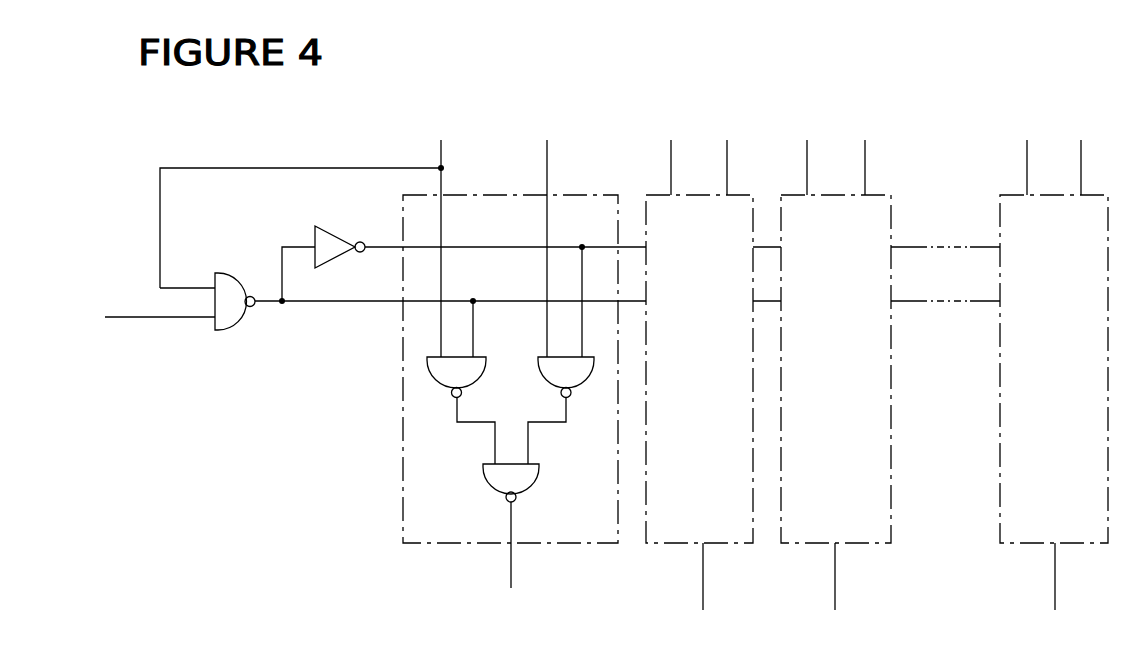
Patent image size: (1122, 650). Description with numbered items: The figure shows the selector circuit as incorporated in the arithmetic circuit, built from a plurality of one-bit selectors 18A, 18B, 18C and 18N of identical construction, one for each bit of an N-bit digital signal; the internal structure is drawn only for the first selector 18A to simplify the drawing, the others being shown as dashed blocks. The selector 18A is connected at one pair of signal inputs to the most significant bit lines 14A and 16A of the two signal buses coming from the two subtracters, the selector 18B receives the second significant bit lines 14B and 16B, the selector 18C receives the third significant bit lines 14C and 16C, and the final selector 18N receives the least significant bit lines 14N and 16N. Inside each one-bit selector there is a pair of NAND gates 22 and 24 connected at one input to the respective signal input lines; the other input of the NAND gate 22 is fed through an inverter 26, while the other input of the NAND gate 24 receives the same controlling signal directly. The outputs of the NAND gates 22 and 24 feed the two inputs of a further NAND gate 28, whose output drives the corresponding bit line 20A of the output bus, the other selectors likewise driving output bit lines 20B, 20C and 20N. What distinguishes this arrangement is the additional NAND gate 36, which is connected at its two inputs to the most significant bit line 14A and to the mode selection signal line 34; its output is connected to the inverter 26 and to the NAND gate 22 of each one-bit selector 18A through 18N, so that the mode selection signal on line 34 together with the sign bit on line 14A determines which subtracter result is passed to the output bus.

The most significant bit line 14A is at (463, 248).
The second significant bit line 14B is at (653, 167).
The third significant bit line 14C is at (787, 167).
The least significant bit line 14N is at (1007, 167).
The most significant bit line 16A is at (551, 235).
The second significant bit line 16B is at (731, 153).
The third significant bit line 16C is at (868, 153).
The least significant bit line 16N is at (1087, 153).
The one-bit selector 18A is at (455, 528).
The one-bit selector 18B is at (697, 527).
The one-bit selector 18C is at (834, 527).
The one-bit selector 18N is at (1056, 527).
The bit line of output bus 20A is at (531, 558).
The bit line of output bus 20B is at (725, 577).
The bit line of output bus 20C is at (857, 577).
The bit line of output bus 20N is at (1078, 577).
The NAND gate 22 is at (443, 375).
The NAND gate 24 is at (575, 373).
The inverter 26 is at (333, 228).
The NAND gate 28 is at (533, 483).
The mode selection signal line 34 is at (157, 320).
The NAND gate 36 is at (228, 332).